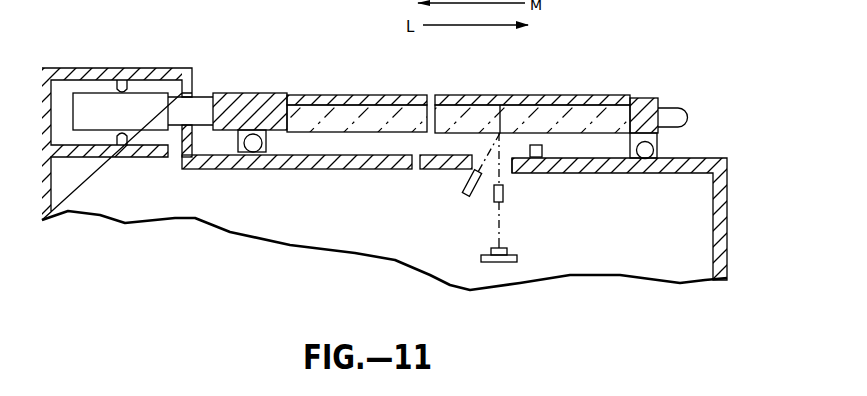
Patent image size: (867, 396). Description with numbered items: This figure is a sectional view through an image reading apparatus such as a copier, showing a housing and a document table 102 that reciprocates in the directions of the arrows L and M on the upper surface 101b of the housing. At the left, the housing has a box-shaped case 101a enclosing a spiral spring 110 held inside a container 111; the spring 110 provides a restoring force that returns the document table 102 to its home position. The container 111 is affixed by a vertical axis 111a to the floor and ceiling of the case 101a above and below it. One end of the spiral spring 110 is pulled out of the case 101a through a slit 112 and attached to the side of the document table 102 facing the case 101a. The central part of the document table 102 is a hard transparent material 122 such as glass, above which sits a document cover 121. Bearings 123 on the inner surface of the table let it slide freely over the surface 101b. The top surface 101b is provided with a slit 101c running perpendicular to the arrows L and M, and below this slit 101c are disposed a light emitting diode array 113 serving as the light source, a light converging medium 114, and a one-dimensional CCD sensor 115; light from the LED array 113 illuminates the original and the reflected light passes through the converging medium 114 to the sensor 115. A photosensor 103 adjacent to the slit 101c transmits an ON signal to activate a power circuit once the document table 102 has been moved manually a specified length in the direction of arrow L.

The box-shaped case 101a is at (65, 68).
The upper surface of the housing 101b is at (707, 158).
The slit 101c is at (512, 173).
The document table 102 is at (273, 93).
The photosensor 103 is at (542, 149).
The spiral spring 110 is at (195, 107).
The container 111 is at (142, 100).
The vertical axis 111a is at (128, 79).
The slit 112 is at (183, 148).
The light emitting diode array 113 is at (464, 196).
The light converging medium 114 is at (503, 201).
The one-dimensional CCD sensor 115 is at (517, 257).
The document cover 121 is at (386, 98).
The hard transparent material 122 is at (457, 112).
The bearings 123 is at (252, 152).